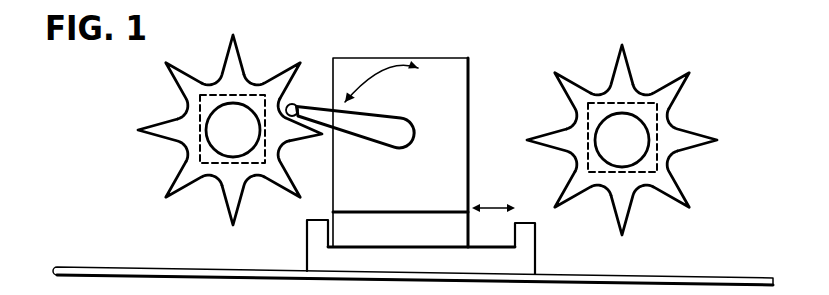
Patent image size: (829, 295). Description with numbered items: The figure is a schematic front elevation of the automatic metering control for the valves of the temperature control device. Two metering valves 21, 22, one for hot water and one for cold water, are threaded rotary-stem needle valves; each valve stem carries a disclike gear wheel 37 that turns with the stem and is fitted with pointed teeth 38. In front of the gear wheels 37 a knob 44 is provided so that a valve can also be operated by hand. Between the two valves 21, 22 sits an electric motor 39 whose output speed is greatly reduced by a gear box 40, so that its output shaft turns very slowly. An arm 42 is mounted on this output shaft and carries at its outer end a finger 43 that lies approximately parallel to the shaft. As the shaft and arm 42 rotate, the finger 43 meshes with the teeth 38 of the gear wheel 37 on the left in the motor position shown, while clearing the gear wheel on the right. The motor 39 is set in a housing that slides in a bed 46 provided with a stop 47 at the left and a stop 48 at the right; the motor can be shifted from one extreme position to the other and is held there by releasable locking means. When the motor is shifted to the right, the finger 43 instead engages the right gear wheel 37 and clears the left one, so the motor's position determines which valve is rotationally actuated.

The metering valve 21 is at (241, 95).
The metering valve 22 is at (632, 103).
The gear wheel 37 is at (180, 137).
The pointed teeth 38 is at (141, 128).
The electric motor 39 is at (466, 52).
The gear box 40 is at (455, 98).
The arm 42 is at (357, 137).
The finger 43 is at (294, 104).
The knob 44 is at (222, 103).
The bed 46 is at (515, 259).
The stop 47 is at (318, 228).
The stop 48 is at (537, 239).